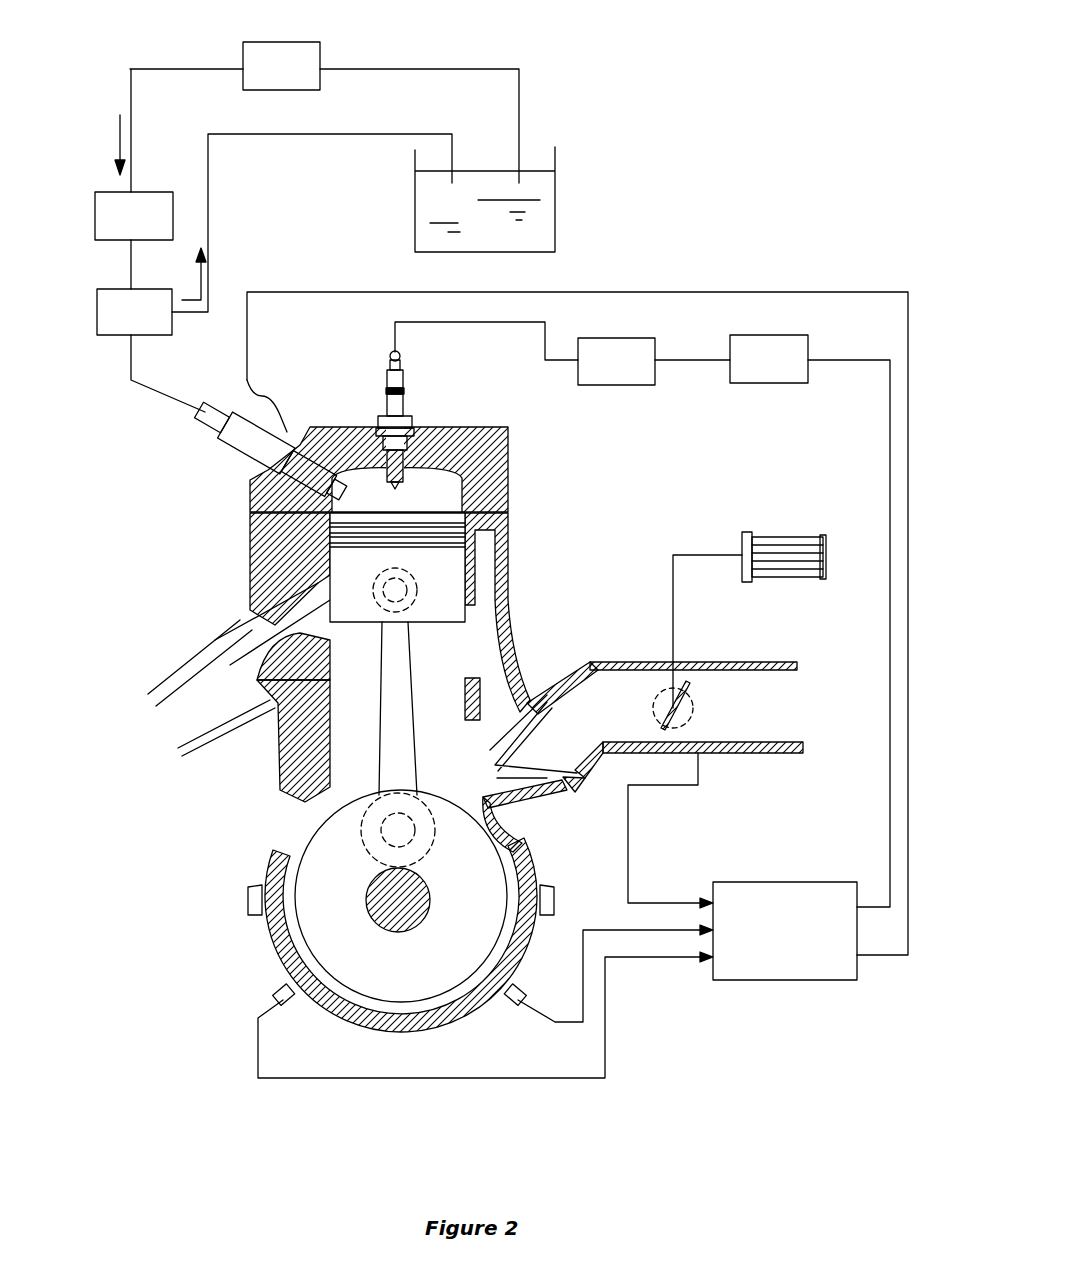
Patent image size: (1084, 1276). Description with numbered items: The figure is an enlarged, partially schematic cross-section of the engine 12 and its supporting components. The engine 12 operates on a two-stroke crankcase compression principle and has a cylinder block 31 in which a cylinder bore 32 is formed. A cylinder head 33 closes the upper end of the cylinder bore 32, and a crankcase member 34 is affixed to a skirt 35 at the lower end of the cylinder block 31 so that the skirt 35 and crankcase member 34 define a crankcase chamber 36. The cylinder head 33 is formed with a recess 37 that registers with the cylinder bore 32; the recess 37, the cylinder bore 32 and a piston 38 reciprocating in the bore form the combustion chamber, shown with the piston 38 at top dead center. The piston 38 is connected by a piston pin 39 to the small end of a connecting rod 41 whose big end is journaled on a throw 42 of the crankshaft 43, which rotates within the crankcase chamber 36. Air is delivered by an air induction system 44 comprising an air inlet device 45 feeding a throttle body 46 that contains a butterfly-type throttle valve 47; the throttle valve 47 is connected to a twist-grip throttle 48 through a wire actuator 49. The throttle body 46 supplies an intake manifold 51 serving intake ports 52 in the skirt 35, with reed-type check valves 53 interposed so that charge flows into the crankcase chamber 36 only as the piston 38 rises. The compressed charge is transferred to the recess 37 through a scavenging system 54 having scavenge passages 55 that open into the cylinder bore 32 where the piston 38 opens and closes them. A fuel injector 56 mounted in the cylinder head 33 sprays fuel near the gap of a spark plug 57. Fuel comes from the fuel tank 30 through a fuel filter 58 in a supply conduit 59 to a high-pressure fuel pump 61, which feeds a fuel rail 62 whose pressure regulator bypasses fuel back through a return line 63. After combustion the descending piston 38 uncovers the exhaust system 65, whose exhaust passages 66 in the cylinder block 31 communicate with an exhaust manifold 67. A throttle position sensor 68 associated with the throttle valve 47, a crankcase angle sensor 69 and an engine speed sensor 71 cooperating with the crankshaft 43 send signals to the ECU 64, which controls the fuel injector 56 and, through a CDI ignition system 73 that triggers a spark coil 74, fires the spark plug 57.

The engine 12 is at (586, 525).
The fuel tank 30 is at (555, 185).
The cylinder block 31 is at (508, 598).
The cylinder bore 32 is at (270, 707).
The cylinder head 33 is at (510, 452).
The crankcase member 34 is at (263, 943).
The skirt 35 is at (278, 750).
The crankcase chamber 36 is at (265, 847).
The recess 37 is at (450, 497).
The piston 38 is at (500, 627).
The piston pin 39 is at (410, 596).
The connecting rod 41 is at (407, 678).
The throw 42 is at (410, 820).
The crankshaft 43 is at (358, 887).
The air induction system 44 is at (758, 680).
The air inlet device 45 is at (804, 692).
The throttle body 46 is at (717, 662).
The throttle valve 47 is at (690, 688).
The twist-grip throttle 48 is at (782, 530).
The wire actuator 49 is at (690, 555).
The intake manifold 51 is at (575, 655).
The intake ports 52 is at (520, 803).
The reed-type check valves 53 is at (530, 760).
The scavenging system 54 is at (500, 671).
The scavenge passages 55 is at (482, 652).
The fuel injector 56 is at (243, 453).
The spark plug 57 is at (398, 418).
The fuel filter 58 is at (265, 42).
The supply conduit 59 is at (375, 66).
The high-pressure fuel pump 61 is at (95, 228).
The fuel rail 62 is at (97, 322).
The return line 63 is at (208, 215).
The ECU 64 is at (770, 882).
The exhaust system 65 is at (190, 688).
The exhaust passages 66 is at (227, 653).
The exhaust manifold 67 is at (150, 692).
The throttle position sensor 68 is at (652, 700).
The crankcase angle sensor 69 is at (265, 985).
The engine speed sensor 71 is at (502, 992).
The CDI ignition system 73 is at (770, 335).
The spark coil 74 is at (605, 338).